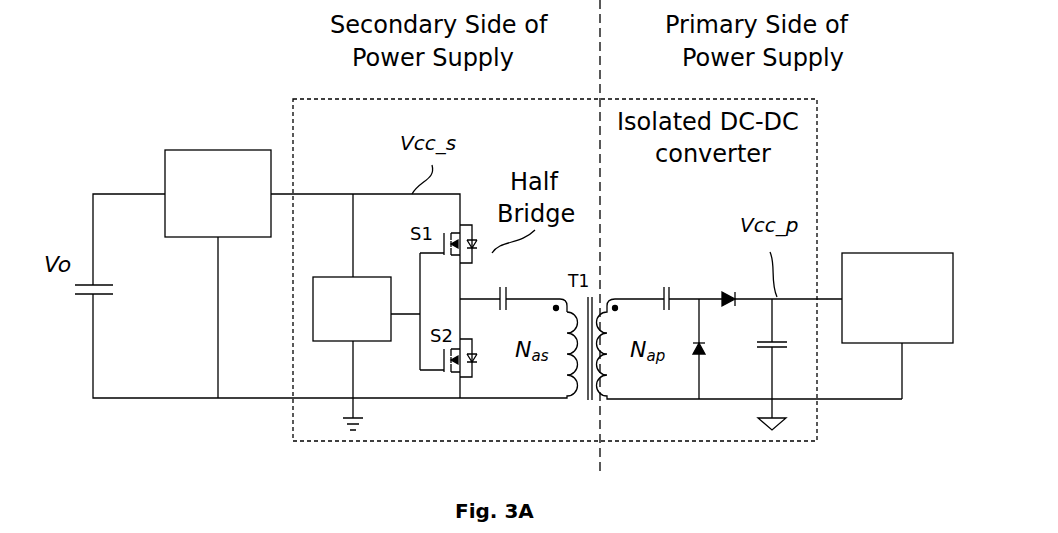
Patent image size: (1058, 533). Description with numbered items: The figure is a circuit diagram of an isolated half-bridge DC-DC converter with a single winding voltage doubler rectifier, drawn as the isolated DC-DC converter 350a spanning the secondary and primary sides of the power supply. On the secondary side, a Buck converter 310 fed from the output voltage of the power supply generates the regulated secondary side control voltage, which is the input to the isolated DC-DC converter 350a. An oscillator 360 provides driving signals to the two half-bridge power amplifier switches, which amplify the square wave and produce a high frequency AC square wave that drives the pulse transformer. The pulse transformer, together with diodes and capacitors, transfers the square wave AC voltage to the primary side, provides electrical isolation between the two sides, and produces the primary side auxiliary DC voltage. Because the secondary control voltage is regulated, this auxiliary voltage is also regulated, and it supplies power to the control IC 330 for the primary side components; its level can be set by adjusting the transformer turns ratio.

The buck converter 310 is at (165, 172).
The control circuit 330 is at (872, 253).
The isolated DC-DC converter 350a is at (293, 99).
The oscillator 360 is at (332, 277).